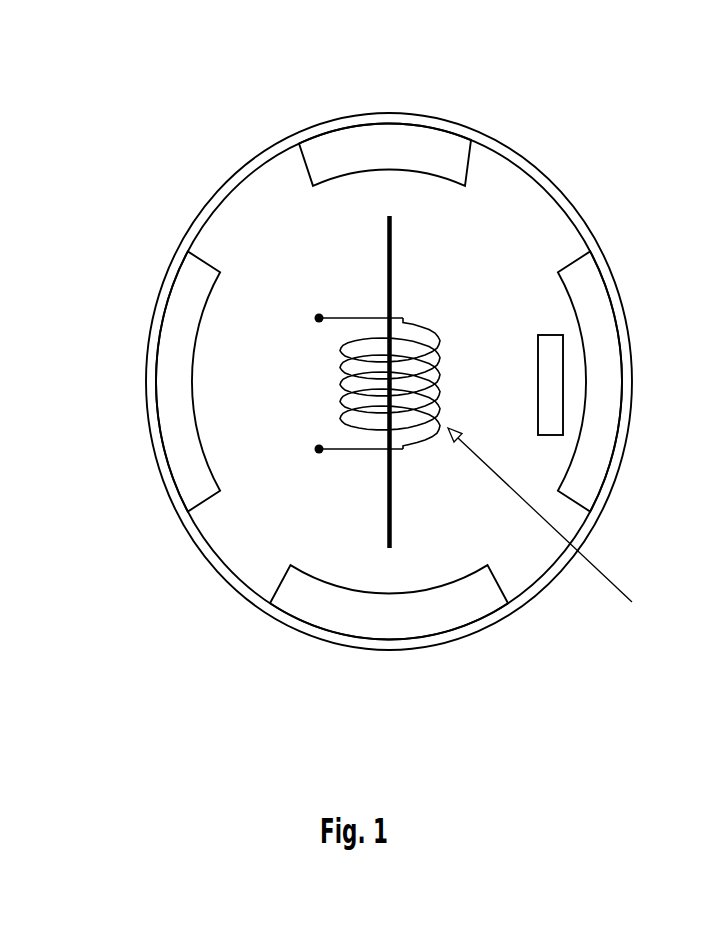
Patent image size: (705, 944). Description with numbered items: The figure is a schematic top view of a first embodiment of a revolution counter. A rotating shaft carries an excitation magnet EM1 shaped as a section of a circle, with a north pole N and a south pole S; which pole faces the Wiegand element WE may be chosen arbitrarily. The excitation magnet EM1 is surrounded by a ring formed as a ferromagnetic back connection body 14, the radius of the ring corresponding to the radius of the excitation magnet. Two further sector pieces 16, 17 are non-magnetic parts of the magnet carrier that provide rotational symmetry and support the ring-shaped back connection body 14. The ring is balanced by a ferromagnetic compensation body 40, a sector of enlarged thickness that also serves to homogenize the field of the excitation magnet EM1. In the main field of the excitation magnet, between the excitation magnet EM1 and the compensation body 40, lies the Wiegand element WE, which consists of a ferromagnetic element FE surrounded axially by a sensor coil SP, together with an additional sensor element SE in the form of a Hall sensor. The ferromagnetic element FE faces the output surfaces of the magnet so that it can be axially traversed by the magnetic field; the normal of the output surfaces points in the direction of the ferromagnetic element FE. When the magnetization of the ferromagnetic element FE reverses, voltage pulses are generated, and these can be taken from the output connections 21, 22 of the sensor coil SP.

The ferromagnetic back connection body 14 is at (217, 200).
The sector piece 16 is at (176, 423).
The sector piece 17 is at (599, 413).
The ferromagnetic compensation body 40 is at (390, 150).
The excitation magnet EM1 is at (432, 615).
The ferromagnetic element FE is at (387, 248).
The additional sensor element SE is at (552, 372).
The sensor coil SP is at (363, 395).
The output connection 21 is at (343, 320).
The output connection 22 is at (343, 451).
The Wiegand element WE is at (556, 524).